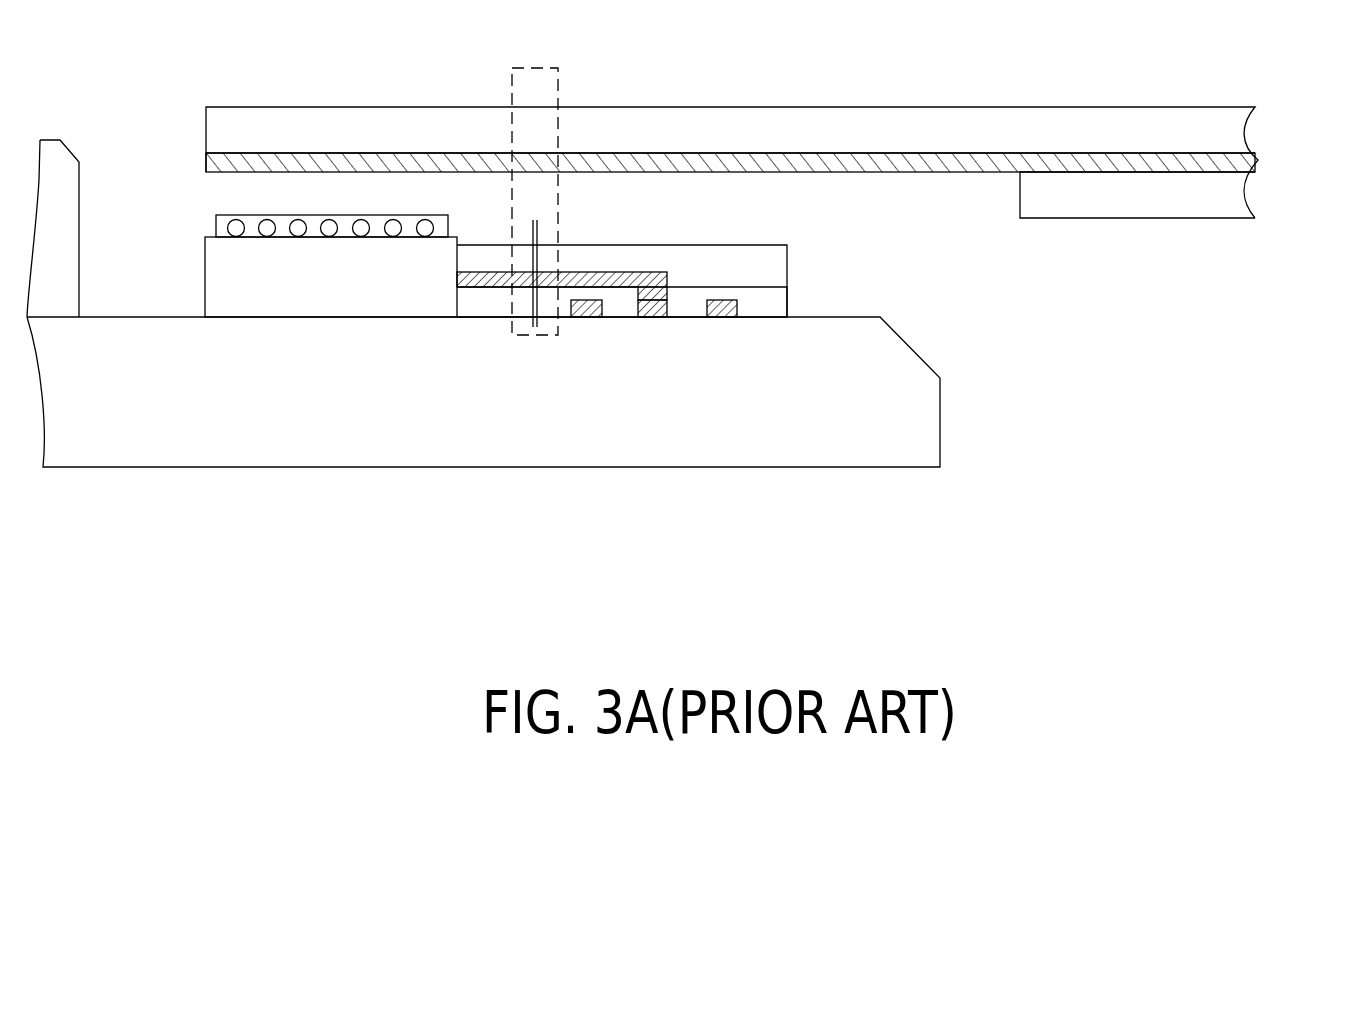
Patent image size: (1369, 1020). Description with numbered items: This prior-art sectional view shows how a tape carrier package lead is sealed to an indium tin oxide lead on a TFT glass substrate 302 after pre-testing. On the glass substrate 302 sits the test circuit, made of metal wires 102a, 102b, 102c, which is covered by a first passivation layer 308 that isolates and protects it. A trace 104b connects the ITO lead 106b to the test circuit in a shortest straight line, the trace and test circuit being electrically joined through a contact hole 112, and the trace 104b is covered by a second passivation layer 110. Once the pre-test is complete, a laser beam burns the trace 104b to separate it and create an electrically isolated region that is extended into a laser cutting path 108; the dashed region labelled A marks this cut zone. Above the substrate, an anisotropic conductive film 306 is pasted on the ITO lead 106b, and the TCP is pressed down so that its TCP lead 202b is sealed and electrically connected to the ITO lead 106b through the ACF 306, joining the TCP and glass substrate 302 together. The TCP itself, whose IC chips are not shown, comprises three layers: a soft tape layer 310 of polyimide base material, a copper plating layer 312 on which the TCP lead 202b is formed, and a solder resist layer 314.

The glass substrate 302 is at (940, 447).
The ITO lead 106b is at (216, 267).
The anisotropic conductive film 306 is at (215, 220).
The soft tape layer 310 is at (1243, 135).
The copper plating layer 312 is at (1257, 162).
The solder resist layer 314 is at (1243, 203).
The TCP lead 202b is at (940, 173).
The second passivation layer 110 is at (778, 265).
The first passivation layer 308 is at (783, 302).
The trace 104b is at (470, 287).
The contact hole 112 is at (670, 296).
The metal wire 102a is at (725, 317).
The metal wire 102b is at (655, 317).
The metal wire 102c is at (577, 317).
The laser cutting path 108 is at (537, 231).
The region A is at (535, 335).